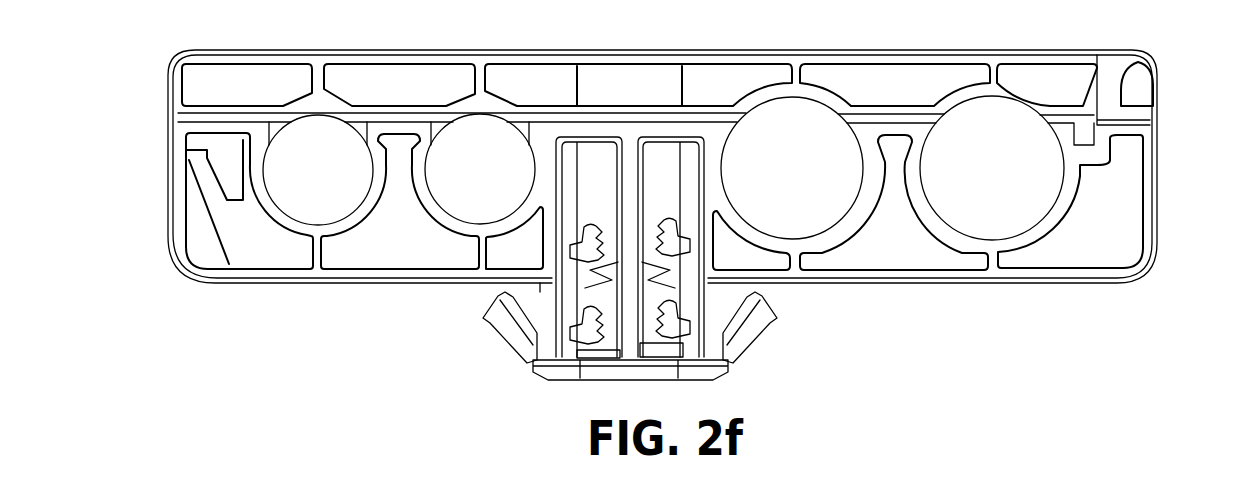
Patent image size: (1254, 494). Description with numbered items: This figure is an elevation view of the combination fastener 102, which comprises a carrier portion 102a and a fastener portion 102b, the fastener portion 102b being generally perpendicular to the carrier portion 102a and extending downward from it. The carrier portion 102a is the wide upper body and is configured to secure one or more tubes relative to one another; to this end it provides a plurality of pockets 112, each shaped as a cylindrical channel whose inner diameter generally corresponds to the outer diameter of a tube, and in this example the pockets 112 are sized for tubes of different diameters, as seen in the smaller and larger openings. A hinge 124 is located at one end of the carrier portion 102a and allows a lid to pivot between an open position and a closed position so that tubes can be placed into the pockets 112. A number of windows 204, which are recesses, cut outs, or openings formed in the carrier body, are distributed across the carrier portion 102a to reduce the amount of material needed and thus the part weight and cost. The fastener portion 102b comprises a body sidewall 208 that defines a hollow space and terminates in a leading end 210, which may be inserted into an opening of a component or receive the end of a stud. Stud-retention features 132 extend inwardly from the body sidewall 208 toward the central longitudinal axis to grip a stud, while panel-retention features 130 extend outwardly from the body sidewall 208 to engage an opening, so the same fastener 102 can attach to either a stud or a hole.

The combination fastener 102 is at (109, 12).
The carrier portion 102a is at (1175, 52).
The fastener portion 102b is at (782, 284).
The pockets 112 is at (316, 139).
The hinge 124 is at (1135, 63).
The panel-retention features 130 is at (502, 334).
The stud-retention features 132 is at (662, 230).
The windows 204 is at (252, 77).
The body sidewall 208 is at (538, 330).
The leading end 210 is at (688, 368).